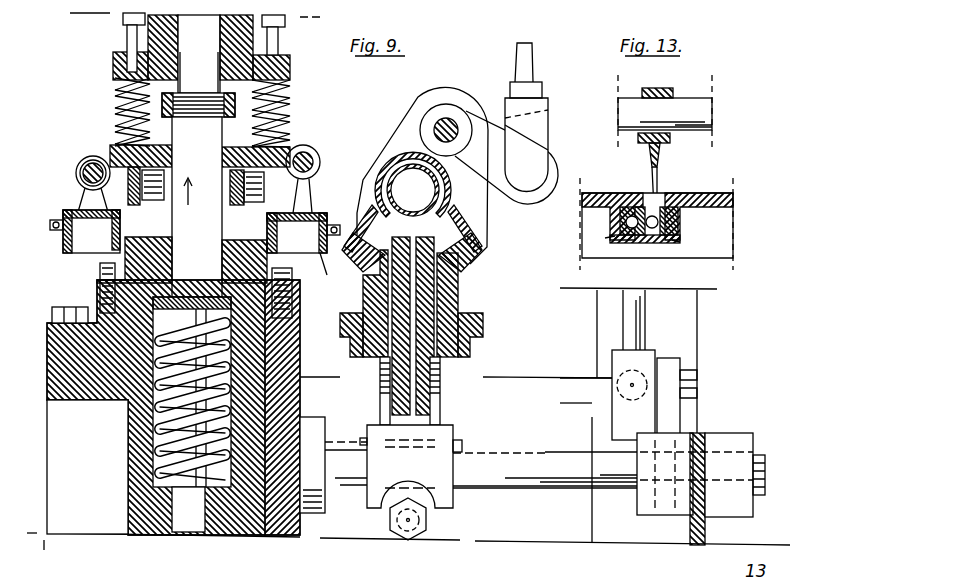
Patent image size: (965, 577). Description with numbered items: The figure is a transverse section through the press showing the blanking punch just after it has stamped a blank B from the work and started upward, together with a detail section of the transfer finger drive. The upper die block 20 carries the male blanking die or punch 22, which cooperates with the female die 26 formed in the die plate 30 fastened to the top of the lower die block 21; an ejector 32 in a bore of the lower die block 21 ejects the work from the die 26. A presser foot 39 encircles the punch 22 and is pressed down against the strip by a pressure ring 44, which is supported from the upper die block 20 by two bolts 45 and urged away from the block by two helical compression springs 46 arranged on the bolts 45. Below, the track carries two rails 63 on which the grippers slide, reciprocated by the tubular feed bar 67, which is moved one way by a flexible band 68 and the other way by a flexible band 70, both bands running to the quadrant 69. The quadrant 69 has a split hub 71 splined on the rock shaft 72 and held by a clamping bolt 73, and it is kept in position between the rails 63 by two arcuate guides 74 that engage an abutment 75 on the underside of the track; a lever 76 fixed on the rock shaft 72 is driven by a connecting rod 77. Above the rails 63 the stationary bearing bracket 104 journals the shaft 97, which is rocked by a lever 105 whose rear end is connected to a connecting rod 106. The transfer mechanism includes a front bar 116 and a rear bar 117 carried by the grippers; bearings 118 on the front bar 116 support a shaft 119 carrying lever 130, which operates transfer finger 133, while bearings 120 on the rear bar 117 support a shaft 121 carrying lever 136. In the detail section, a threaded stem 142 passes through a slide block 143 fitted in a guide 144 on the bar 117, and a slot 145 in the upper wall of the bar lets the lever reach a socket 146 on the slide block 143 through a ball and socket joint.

In FIG. 9, the upper die block 20 is at (113, 62).
In FIG. 9, the lower die block 21 is at (118, 400).
In FIG. 9, the male blanking die or punch 22 is at (200, 54).
In FIG. 9, the female die 26 is at (272, 258).
In FIG. 9, the die plate 30 is at (100, 276).
In FIG. 9, the ejector 32 is at (192, 403).
In FIG. 9, the presser foot 39 is at (200, 207).
In FIG. 9, the pressure ring 44 is at (165, 160).
In FIG. 9, the bolts 45 is at (124, 30).
In FIG. 9, the helical compression springs 46 is at (118, 100).
In FIG. 9, the rails 63 is at (470, 263).
In FIG. 9, the tubular feed bar 67 is at (438, 189).
In FIG. 9, the flexible band 68 is at (424, 240).
In FIG. 9, the quadrant 69 is at (422, 300).
In FIG. 9, the flexible band 70 is at (394, 240).
In FIG. 9, the split hub 71 is at (410, 466).
In FIG. 9, the rock shaft 72 is at (481, 463).
In FIG. 9, the clamping bolt 73 is at (418, 530).
In FIG. 9, the arcuate guides 74 is at (382, 398).
In FIG. 9, the abutment 75 is at (352, 352).
In FIG. 9, the lever 76 is at (670, 415).
In FIG. 9, the connecting rod 77 is at (645, 323).
In FIG. 9, the shaft 97 is at (438, 127).
In FIG. 9, the stationary bearing bracket 104 is at (487, 216).
In FIG. 9, the lever 105 is at (506, 157).
In FIG. 9, the connecting rod 106 is at (532, 63).
In FIG. 9, the front bar 116 is at (78, 212).
In FIG. 9, the rear bar 117 is at (326, 273).
In FIG. 13, the rear bar 117 is at (720, 234).
In FIG. 9, the bearing 118 is at (100, 158).
In FIG. 9, the shaft 119 is at (83, 168).
In FIG. 9, the bearing 120 is at (308, 147).
In FIG. 9, the shaft 121 is at (314, 162).
In FIG. 13, the shaft 121 is at (705, 109).
In FIG. 9, the lever 130 is at (80, 176).
In FIG. 9, the transfer finger 133 is at (52, 228).
In FIG. 9, the lever 136 is at (312, 186).
In FIG. 13, the lever 136 is at (660, 152).
In FIG. 13, the stem 142 is at (634, 193).
In FIG. 13, the slide block 143 is at (614, 240).
In FIG. 13, the guide 144 is at (674, 242).
In FIG. 13, the slot 145 is at (668, 200).
In FIG. 13, the socket 146 is at (670, 224).
In FIG. 9, the blank B is at (112, 258).